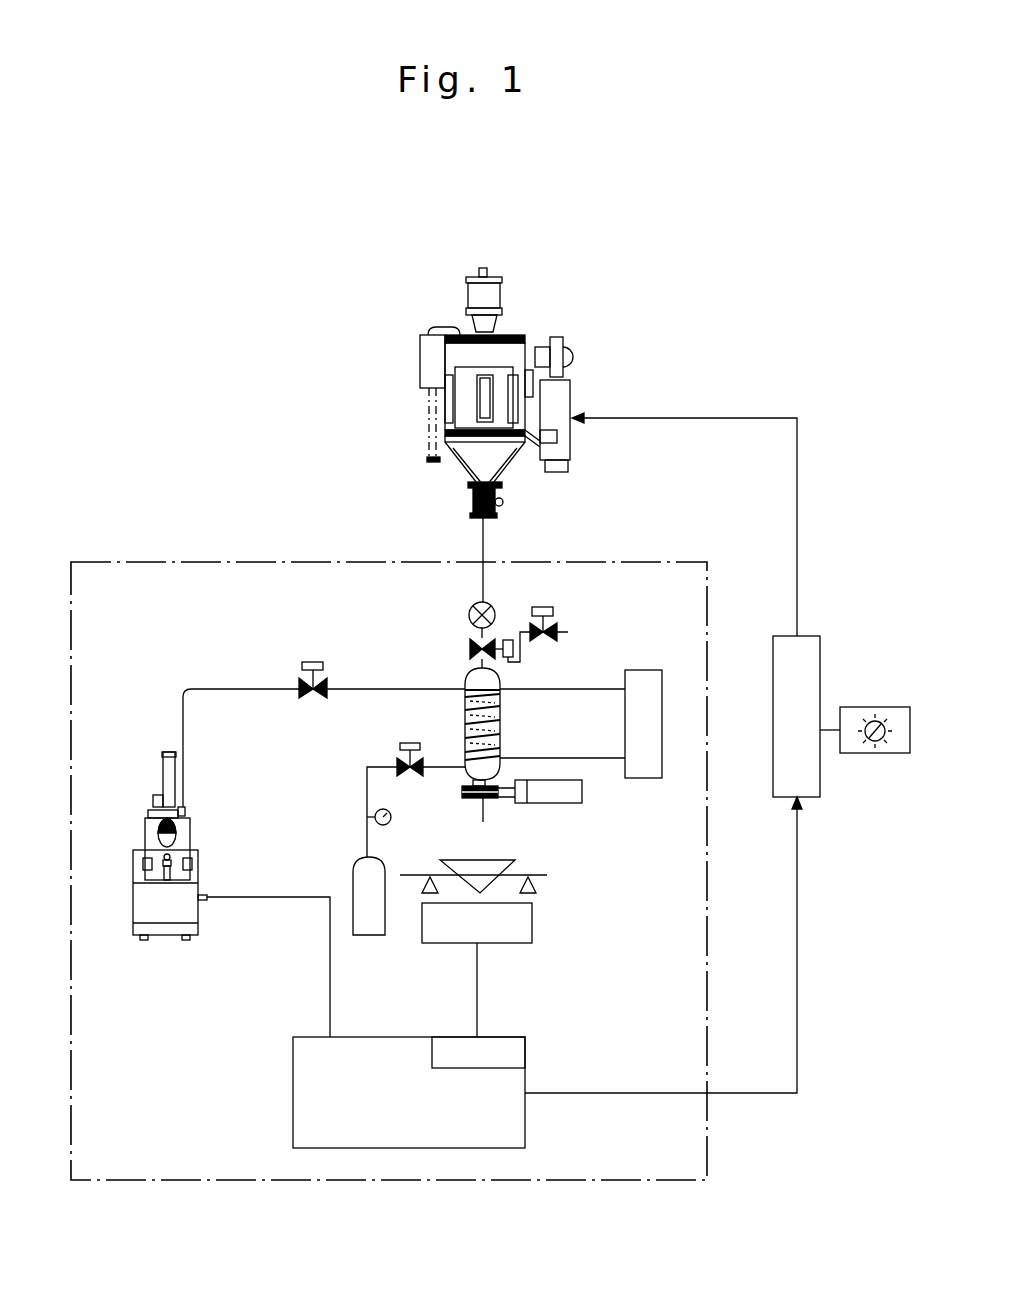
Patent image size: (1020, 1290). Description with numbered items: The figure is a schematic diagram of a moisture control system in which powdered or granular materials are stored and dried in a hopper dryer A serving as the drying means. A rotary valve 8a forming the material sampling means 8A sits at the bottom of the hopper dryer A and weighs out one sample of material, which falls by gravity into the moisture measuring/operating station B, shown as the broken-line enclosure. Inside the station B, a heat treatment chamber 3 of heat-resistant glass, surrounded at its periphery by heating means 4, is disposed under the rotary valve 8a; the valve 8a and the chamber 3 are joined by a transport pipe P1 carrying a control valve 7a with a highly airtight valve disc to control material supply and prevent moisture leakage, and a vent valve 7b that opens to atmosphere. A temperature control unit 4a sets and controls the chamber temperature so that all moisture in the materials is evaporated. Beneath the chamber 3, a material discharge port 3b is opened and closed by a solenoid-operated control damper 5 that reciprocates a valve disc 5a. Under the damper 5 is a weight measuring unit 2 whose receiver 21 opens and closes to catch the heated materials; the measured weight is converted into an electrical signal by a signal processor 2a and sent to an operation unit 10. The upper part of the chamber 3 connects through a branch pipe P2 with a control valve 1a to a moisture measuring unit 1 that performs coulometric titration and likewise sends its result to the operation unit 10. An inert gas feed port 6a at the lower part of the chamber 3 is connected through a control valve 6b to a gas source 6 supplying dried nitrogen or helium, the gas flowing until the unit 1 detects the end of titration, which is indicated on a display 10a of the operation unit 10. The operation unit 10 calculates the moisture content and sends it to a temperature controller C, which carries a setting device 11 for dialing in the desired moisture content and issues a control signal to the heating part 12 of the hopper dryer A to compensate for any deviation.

The hopper dryer A is at (418, 312).
The moisture measuring/operating station B is at (245, 562).
The temperature controller C is at (782, 640).
The transport pipe P1 is at (486, 566).
The branch pipe P2 is at (372, 688).
The material sampling means 8A is at (468, 567).
The rotary valve 8a is at (470, 612).
The control valve 7a is at (470, 650).
The vent valve 7b is at (553, 642).
The heat treatment chamber 3 is at (492, 688).
The heating means 4 is at (503, 706).
The temperature control unit 4a is at (650, 680).
The control valve 1a is at (306, 695).
The moisture measuring unit 1 is at (190, 842).
The inert gas feed port 6a is at (462, 766).
The control valve 6b is at (411, 773).
The gas source 6 is at (360, 870).
The valve disc 5a is at (464, 800).
The material discharge port 3b is at (487, 805).
The solenoid-operated control damper 5 is at (583, 790).
The receiver 21 is at (458, 866).
The weight measuring unit 2 is at (500, 889).
The signal processor 2a is at (532, 928).
The operation unit 10 is at (399, 1048).
The display 10a is at (510, 1057).
The setting device 11 is at (878, 708).
The heating part 12 is at (562, 404).